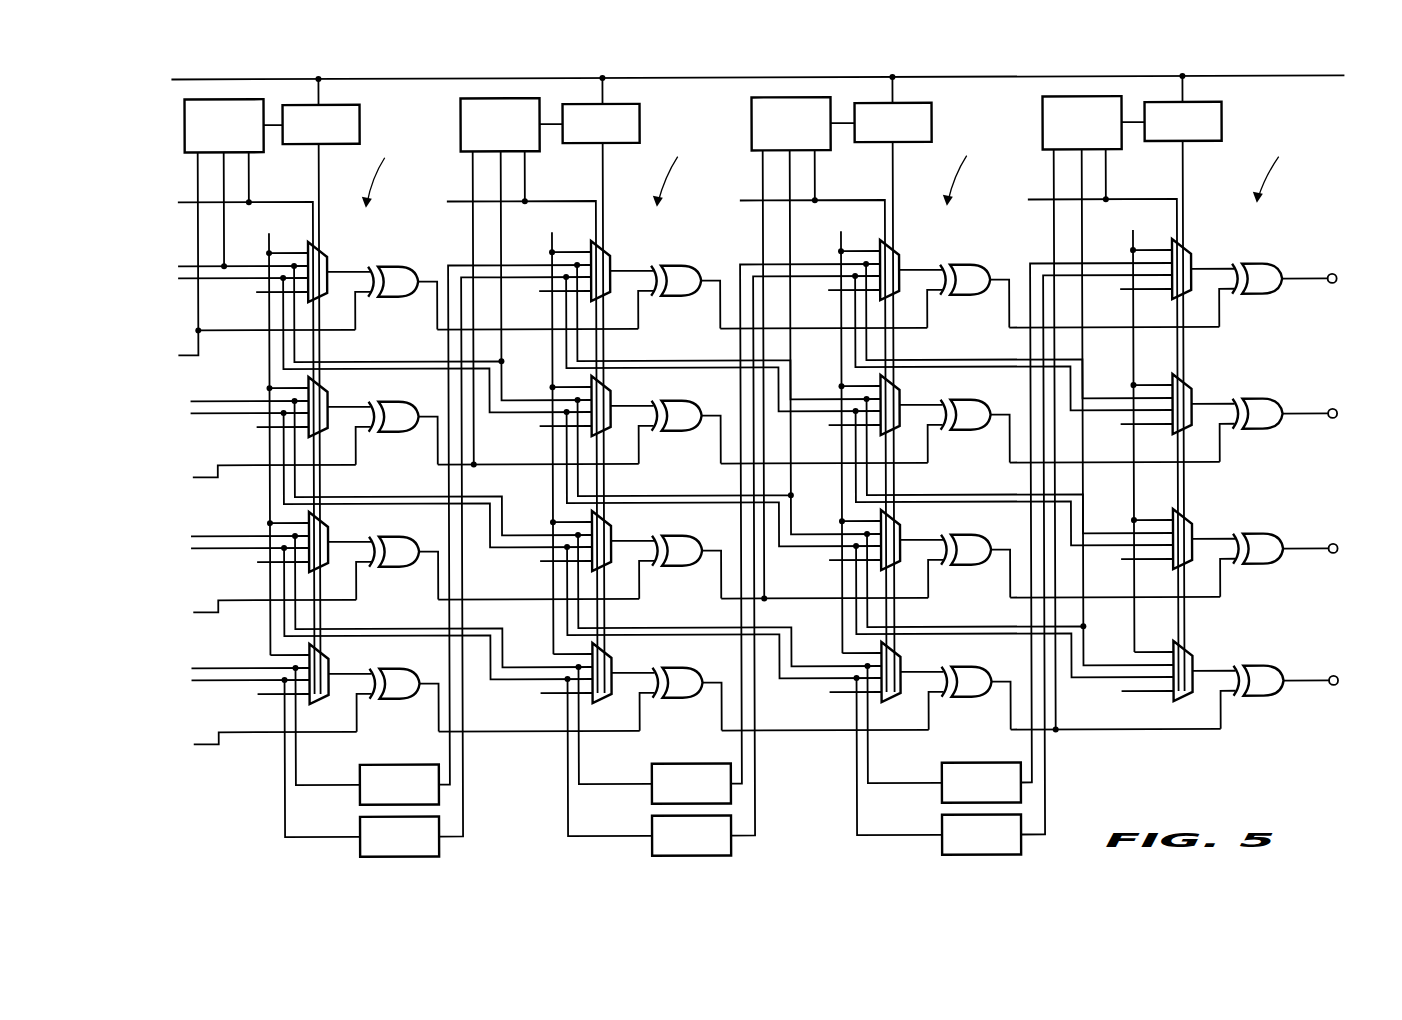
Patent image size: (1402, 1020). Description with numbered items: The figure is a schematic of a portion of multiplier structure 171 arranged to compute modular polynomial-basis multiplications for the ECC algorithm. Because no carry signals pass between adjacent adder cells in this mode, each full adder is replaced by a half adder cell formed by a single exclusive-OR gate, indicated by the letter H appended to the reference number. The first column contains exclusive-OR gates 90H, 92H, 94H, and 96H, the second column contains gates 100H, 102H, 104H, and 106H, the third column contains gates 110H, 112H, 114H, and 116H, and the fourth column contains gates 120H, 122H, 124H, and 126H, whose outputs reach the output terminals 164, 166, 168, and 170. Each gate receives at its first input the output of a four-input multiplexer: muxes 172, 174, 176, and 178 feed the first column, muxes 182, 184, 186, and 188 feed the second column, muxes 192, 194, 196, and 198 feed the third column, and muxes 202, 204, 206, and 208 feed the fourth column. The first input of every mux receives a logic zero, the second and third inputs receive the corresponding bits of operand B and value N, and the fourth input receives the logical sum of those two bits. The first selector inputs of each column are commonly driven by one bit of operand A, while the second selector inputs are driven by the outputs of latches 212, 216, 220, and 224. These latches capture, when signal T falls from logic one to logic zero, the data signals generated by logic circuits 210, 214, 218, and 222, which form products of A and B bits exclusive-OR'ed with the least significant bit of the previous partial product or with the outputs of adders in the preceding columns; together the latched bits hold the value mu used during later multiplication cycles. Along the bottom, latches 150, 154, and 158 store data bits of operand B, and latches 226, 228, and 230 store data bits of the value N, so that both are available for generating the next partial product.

The logic circuit 210 is at (185, 132).
The latch 212 is at (360, 124).
The logic circuit 214 is at (461, 128).
The latch 216 is at (640, 120).
The logic circuit 218 is at (752, 121).
The latch 220 is at (932, 120).
The logic circuit 222 is at (1043, 121).
The latch 224 is at (1222, 120).
The multiplexer 172 is at (325, 252).
The multiplexer 174 is at (325, 387).
The multiplexer 176 is at (325, 522).
The multiplexer 178 is at (325, 654).
The multiplexer 182 is at (608, 252).
The multiplexer 184 is at (608, 387).
The multiplexer 186 is at (608, 522).
The multiplexer 188 is at (608, 654).
The multiplexer 192 is at (897, 252).
The multiplexer 194 is at (897, 387).
The multiplexer 196 is at (897, 522).
The multiplexer 198 is at (897, 654).
The multiplexer 202 is at (1189, 252).
The multiplexer 204 is at (1189, 387).
The multiplexer 206 is at (1189, 522).
The multiplexer 208 is at (1189, 654).
The exclusive-OR gate 90H is at (395, 298).
The exclusive-OR gate 92H is at (395, 433).
The exclusive-OR gate 94H is at (395, 568).
The exclusive-OR gate 96H is at (395, 700).
The exclusive-OR gate 100H is at (678, 298).
The exclusive-OR gate 102H is at (678, 433).
The exclusive-OR gate 104H is at (678, 568).
The exclusive-OR gate 106H is at (678, 700).
The exclusive-OR gate 110H is at (967, 298).
The exclusive-OR gate 112H is at (967, 433).
The exclusive-OR gate 114H is at (967, 568).
The exclusive-OR gate 116H is at (967, 700).
The exclusive-OR gate 120H is at (1259, 298).
The exclusive-OR gate 122H is at (1259, 433).
The exclusive-OR gate 124H is at (1259, 568).
The exclusive-OR gate 126H is at (1259, 700).
The latch 150 is at (358, 766).
The latch 154 is at (650, 766).
The latch 158 is at (940, 766).
The latch 226 is at (358, 818).
The latch 228 is at (650, 818).
The latch 230 is at (940, 818).
The output terminal 164 is at (1333, 287).
The output terminal 166 is at (1333, 422).
The output terminal 168 is at (1333, 557).
The output terminal 170 is at (1333, 689).
The multiplier structure 171 is at (731, 460).